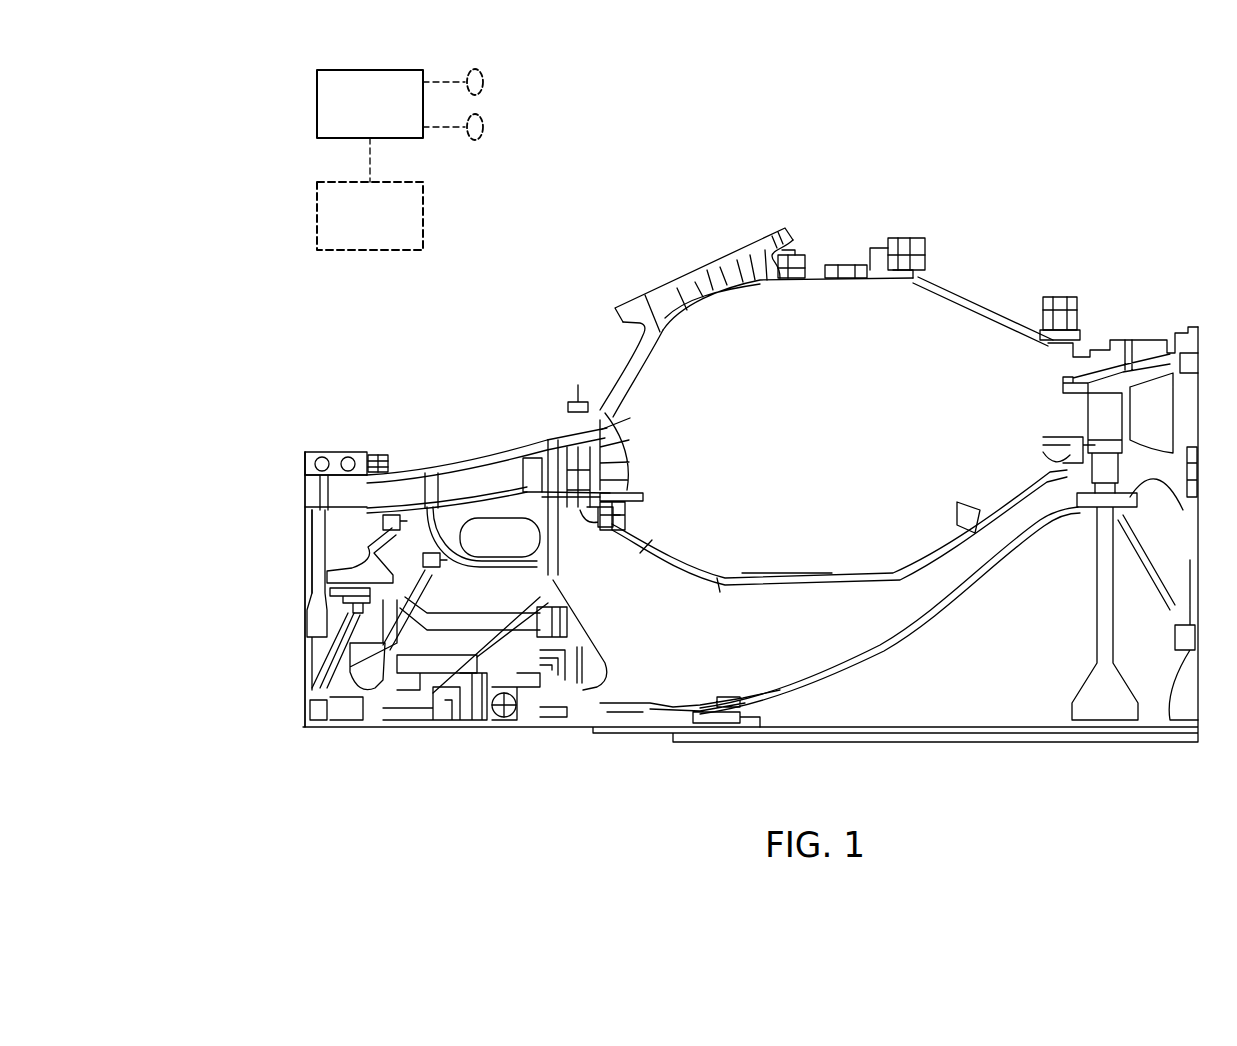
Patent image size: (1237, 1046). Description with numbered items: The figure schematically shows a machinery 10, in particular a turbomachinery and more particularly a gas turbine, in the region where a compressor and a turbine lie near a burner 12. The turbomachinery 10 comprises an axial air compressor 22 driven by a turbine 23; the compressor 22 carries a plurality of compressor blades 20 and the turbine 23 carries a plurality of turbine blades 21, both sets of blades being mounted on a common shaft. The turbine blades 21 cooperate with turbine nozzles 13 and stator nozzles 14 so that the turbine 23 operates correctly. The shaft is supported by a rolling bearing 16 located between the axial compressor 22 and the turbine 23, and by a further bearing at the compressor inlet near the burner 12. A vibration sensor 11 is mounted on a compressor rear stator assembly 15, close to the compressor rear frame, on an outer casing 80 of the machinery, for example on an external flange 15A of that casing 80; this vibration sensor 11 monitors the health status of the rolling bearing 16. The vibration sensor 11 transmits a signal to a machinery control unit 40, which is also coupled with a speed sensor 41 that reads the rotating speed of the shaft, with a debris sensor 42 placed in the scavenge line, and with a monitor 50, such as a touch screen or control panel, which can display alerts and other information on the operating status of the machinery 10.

The turbomachinery 10 is at (691, 168).
The vibration sensor 11 is at (347, 446).
The burner 12 is at (855, 329).
The turbine nozzles 13 is at (1058, 373).
The stator nozzles 14 is at (1155, 363).
The compressor rear stator assembly 15 is at (312, 448).
The external flange 15A is at (369, 452).
The rolling bearing 16 is at (508, 716).
The compressor blades 20 is at (305, 497).
The turbine blades 21 is at (1103, 413).
The axial air compressor 22 is at (283, 416).
The turbine 23 is at (1127, 326).
The machinery control unit 40 is at (317, 96).
The speed sensor 41 is at (485, 127).
The debris sensor 42 is at (485, 82).
The monitor 50 is at (317, 215).
The outer casing 80 is at (494, 448).